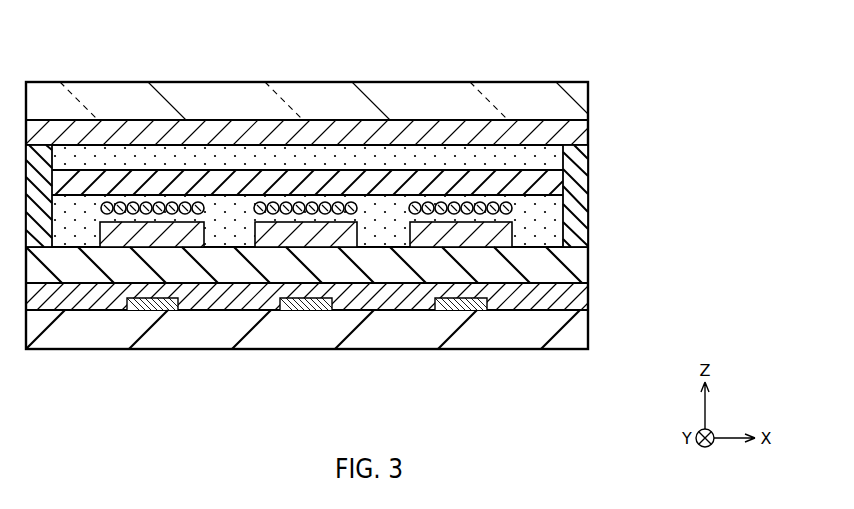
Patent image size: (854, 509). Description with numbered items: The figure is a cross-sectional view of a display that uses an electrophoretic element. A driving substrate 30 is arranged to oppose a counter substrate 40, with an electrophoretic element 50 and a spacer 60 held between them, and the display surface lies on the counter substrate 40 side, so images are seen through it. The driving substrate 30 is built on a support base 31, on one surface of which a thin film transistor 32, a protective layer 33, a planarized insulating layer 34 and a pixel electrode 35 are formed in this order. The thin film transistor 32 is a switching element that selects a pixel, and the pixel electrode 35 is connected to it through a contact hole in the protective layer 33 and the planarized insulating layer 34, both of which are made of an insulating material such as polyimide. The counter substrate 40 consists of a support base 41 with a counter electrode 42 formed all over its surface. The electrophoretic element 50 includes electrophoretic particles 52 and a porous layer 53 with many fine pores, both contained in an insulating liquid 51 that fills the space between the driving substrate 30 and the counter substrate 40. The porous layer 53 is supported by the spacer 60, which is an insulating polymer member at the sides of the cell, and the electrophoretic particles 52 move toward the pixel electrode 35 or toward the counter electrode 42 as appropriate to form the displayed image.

The driving substrate 30 is at (322, 338).
The support base 31 is at (76, 340).
The thin film transistor 32 is at (147, 302).
The protective layer 33 is at (198, 300).
The planarized insulating layer 34 is at (268, 272).
The pixel electrode 35 is at (453, 233).
The counter substrate 40 is at (323, 72).
The support base 41 is at (75, 82).
The counter electrode 42 is at (148, 125).
The electrophoretic element 50 is at (394, 226).
The insulating liquid 51 is at (228, 158).
The electrophoretic particle 52 is at (338, 202).
The porous layer 53 is at (435, 193).
The spacer 60 is at (576, 233).